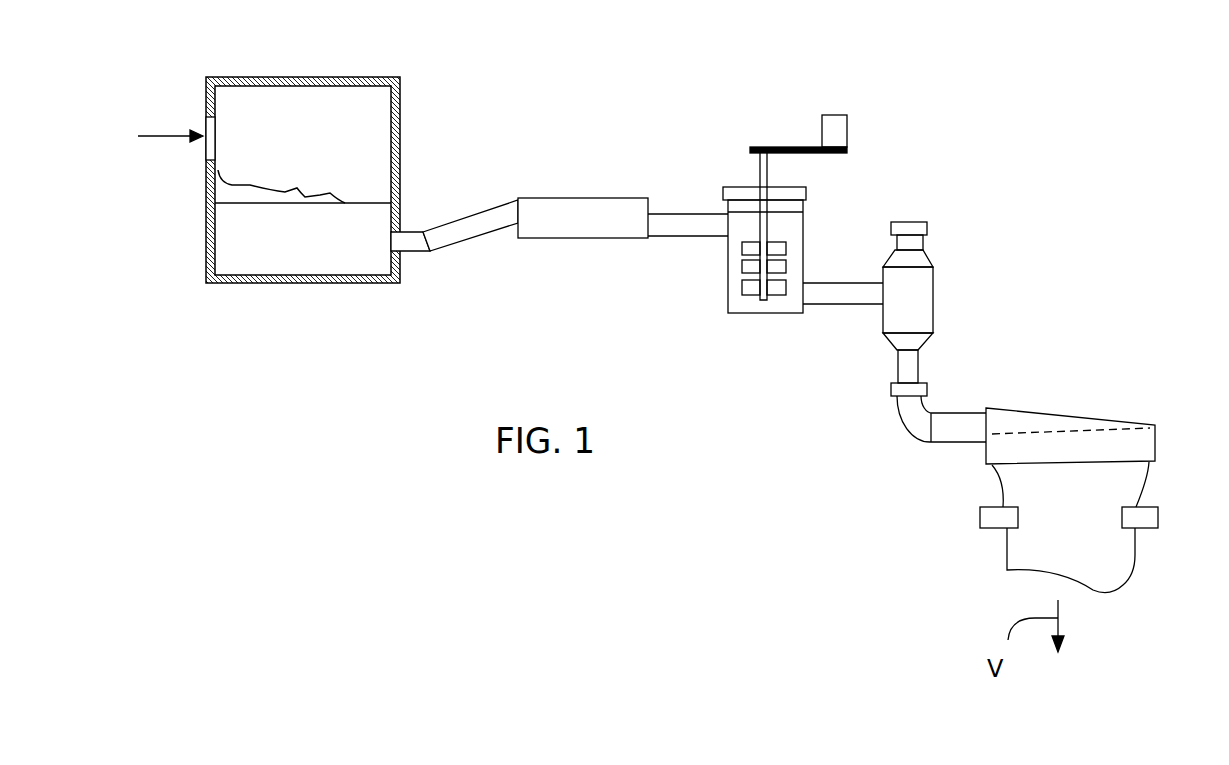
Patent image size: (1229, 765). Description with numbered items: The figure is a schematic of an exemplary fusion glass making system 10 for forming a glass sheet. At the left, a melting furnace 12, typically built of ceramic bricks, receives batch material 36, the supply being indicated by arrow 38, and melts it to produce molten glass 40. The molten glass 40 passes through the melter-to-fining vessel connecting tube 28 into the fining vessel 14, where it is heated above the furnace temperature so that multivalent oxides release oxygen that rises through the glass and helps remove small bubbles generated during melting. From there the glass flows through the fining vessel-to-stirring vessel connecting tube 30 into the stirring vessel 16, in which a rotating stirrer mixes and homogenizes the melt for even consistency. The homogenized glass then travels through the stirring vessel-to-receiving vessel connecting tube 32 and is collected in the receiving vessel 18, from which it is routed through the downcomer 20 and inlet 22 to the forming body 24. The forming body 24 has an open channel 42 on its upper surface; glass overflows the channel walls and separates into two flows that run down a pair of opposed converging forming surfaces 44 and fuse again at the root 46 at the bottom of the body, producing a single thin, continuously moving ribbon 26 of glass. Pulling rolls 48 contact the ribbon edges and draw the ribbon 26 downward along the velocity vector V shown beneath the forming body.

The fusion glass making system 10 is at (693, 112).
The melting furnace 12 is at (317, 77).
The fining vessel 14 is at (577, 198).
The stirring vessel 16 is at (728, 300).
The receiving vessel 18 is at (933, 298).
The downcomer 20 is at (897, 368).
The inlet 22 is at (943, 443).
The forming body 24 is at (1155, 443).
The ribbon 26 is at (1103, 538).
The melter-to-fining vessel connecting tube 28 is at (495, 205).
The fining vessel-to-stirring vessel connecting tube 30 is at (682, 237).
The stirring vessel-to-receiving vessel connecting tube 32 is at (840, 305).
The batch material 36 is at (253, 185).
The arrow 38 is at (167, 136).
The molten glass 40 is at (306, 242).
The open channel 42 is at (1038, 432).
The converging forming surfaces 44 is at (1007, 452).
The root 46 is at (1112, 462).
The pulling rolls 48 is at (992, 528).